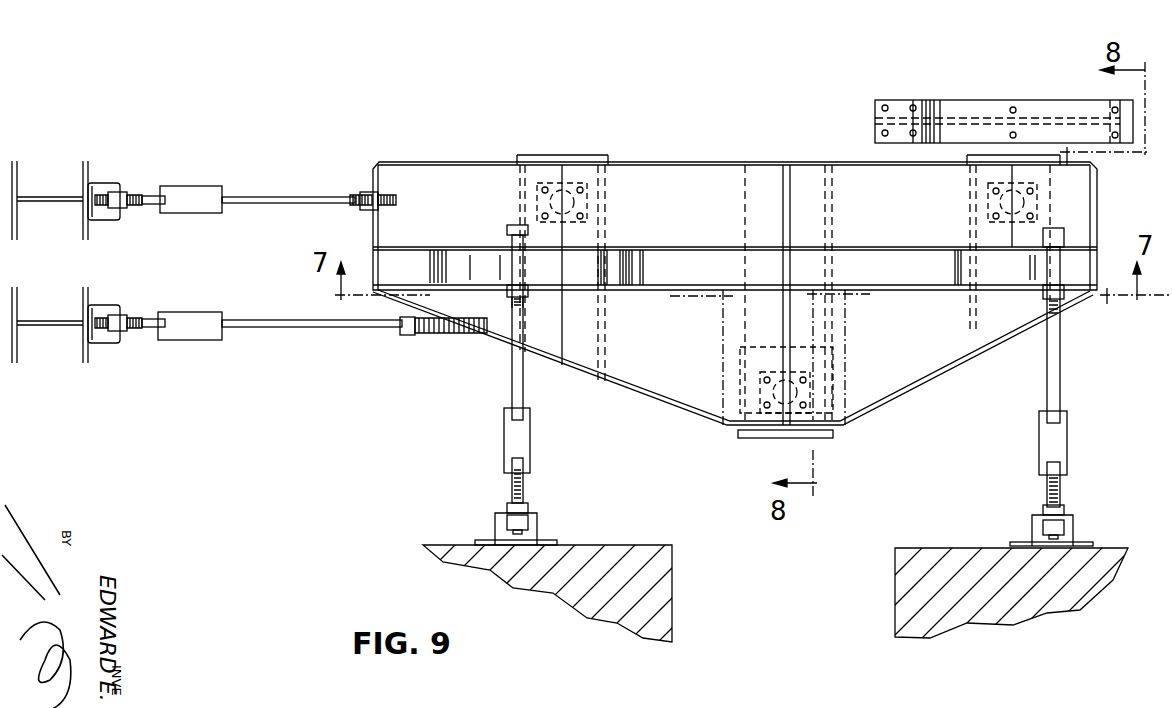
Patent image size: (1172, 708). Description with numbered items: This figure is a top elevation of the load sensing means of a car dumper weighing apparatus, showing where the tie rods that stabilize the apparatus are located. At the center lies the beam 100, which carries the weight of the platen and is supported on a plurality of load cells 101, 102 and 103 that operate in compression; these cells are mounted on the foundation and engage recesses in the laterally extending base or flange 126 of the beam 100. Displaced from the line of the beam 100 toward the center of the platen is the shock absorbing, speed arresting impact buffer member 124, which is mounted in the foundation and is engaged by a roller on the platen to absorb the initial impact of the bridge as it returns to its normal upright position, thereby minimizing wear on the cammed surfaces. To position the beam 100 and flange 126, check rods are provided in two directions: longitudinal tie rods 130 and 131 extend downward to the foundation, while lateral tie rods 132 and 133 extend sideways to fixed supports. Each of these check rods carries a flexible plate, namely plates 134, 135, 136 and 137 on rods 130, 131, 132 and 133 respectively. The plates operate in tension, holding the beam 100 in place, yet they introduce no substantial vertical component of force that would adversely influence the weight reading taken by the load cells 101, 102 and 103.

The beam 100 is at (905, 278).
The load cell 101 is at (585, 200).
The load cell 102 is at (800, 391).
The load cell 103 is at (986, 200).
The impact buffer member 124 is at (989, 100).
The flange 126 is at (690, 185).
The longitudinal tie rod 130 is at (525, 388).
The longitudinal tie rod 131 is at (1062, 380).
The lateral tie rod 132 is at (245, 205).
The lateral tie rod 133 is at (272, 330).
The flexible plate 134 is at (530, 447).
The flexible plate 135 is at (1068, 445).
The flexible plate 136 is at (192, 214).
The flexible plate 137 is at (190, 341).